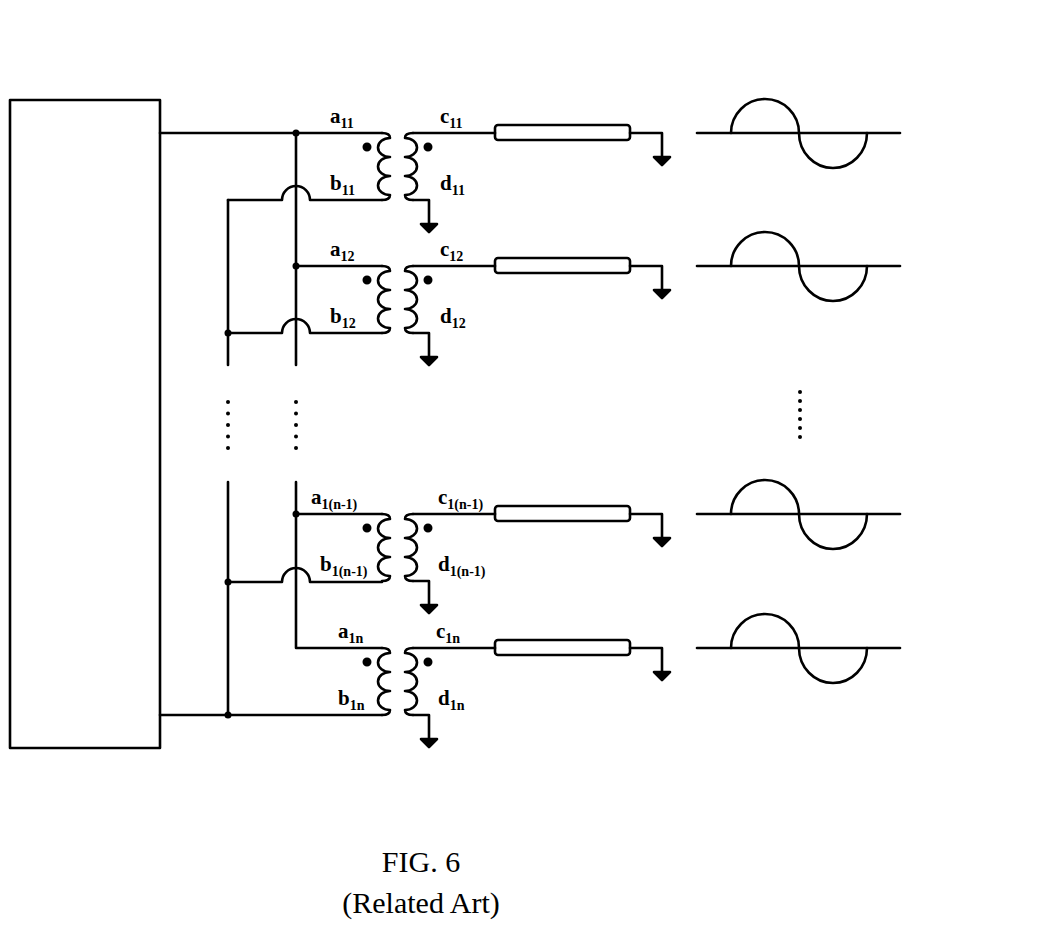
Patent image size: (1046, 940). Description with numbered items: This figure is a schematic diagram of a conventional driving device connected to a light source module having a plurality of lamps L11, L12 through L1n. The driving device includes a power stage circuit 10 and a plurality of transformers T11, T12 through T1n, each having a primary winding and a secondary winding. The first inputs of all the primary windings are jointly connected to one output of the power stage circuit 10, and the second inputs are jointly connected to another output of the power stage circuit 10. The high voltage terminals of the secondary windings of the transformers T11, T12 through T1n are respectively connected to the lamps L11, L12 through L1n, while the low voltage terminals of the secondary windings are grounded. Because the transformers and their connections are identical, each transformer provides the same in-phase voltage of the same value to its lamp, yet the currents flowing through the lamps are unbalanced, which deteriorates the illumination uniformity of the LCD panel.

The power stage circuit 10 is at (59, 100).
The transformer T11 is at (429, 167).
The transformer T12 is at (429, 300).
The transformer T1n is at (429, 682).
The lamp L11 is at (582, 129).
The lamp L12 is at (582, 262).
The lamp L1n is at (582, 644).